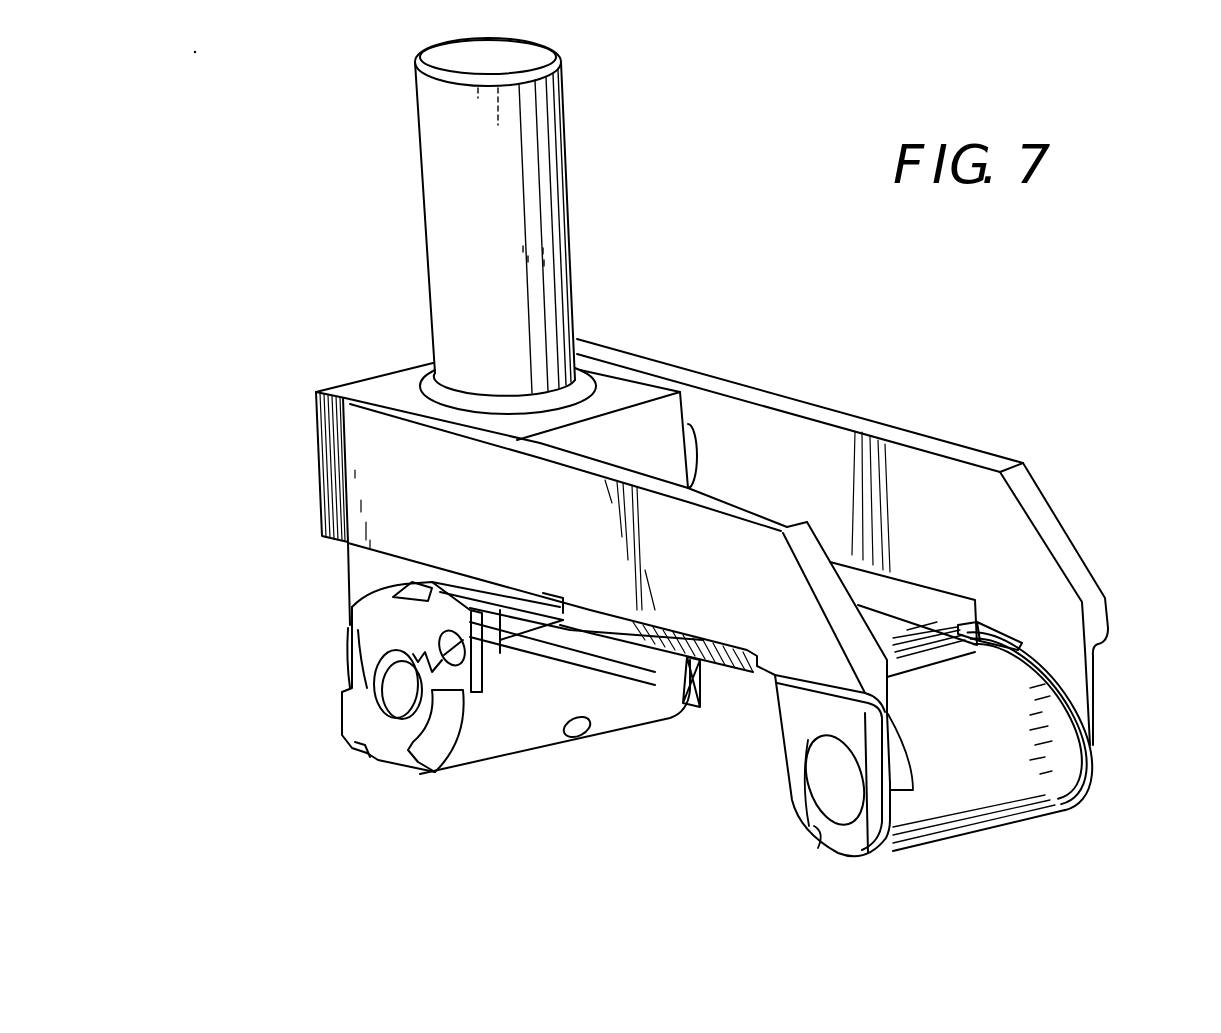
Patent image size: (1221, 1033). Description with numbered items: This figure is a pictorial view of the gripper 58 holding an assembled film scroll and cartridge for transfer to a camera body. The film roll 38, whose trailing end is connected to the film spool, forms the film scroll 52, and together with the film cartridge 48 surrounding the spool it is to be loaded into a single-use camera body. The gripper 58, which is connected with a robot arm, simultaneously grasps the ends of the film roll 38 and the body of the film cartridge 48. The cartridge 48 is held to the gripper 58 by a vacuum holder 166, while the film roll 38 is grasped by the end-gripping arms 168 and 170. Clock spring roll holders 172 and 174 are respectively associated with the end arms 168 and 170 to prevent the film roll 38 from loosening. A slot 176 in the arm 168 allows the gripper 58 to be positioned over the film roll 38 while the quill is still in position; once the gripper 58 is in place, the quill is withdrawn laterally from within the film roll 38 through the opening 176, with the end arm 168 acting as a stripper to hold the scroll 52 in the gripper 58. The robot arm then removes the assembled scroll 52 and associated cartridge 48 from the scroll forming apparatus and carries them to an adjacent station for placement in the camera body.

The gripper 58 is at (296, 479).
The vacuum holder 166 is at (345, 575).
The end-gripping arm 170 is at (1093, 680).
The clock spring roll holder 174 is at (1077, 717).
The clock spring roll holder 172 is at (905, 770).
The end-gripping arm 168 is at (777, 792).
The slot 176 is at (820, 834).
The film roll 38 is at (841, 850).
The film scroll 52 is at (1003, 842).
The film cartridge 48 is at (510, 748).